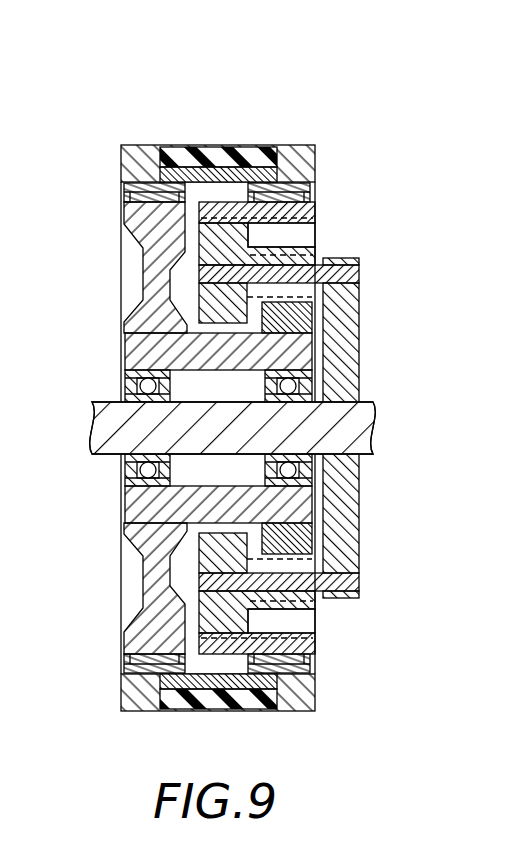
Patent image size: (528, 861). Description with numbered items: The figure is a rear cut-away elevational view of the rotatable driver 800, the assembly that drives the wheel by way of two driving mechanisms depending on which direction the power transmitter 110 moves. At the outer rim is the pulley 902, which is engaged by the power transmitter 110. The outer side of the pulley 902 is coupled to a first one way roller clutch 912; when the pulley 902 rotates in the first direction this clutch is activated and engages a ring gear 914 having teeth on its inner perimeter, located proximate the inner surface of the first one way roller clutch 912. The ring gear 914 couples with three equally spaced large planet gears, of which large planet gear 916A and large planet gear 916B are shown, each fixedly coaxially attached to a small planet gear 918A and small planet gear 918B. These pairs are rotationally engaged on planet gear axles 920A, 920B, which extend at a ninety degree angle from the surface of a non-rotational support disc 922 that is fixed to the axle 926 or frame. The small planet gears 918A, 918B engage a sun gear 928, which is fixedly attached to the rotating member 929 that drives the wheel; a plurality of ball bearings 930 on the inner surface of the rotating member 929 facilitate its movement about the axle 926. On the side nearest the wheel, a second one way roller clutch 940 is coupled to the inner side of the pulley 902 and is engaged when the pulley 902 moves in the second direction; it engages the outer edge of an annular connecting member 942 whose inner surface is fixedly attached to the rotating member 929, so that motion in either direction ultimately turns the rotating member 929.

The rotatable driver 800 is at (130, 74).
The power transmitter 110 is at (218, 145).
The pulley 902 is at (296, 145).
The first one way roller clutch 912 is at (316, 188).
The ring gear 914 is at (316, 210).
The large planet gear 916A is at (250, 236).
The small planet gear 918A is at (316, 246).
The planet gear axle 920A is at (360, 273).
The sun gear 928 is at (312, 318).
The support disc 922 is at (360, 355).
The axle 926 is at (374, 428).
The rotating member 929 is at (127, 353).
The ball bearings 930 is at (137, 390).
The second one way roller clutch 940 is at (124, 190).
The annular connecting member 942 is at (145, 277).
The planet gear axle 920B is at (359, 580).
The small planet gear 918B is at (316, 615).
The large planet gear 916B is at (250, 615).